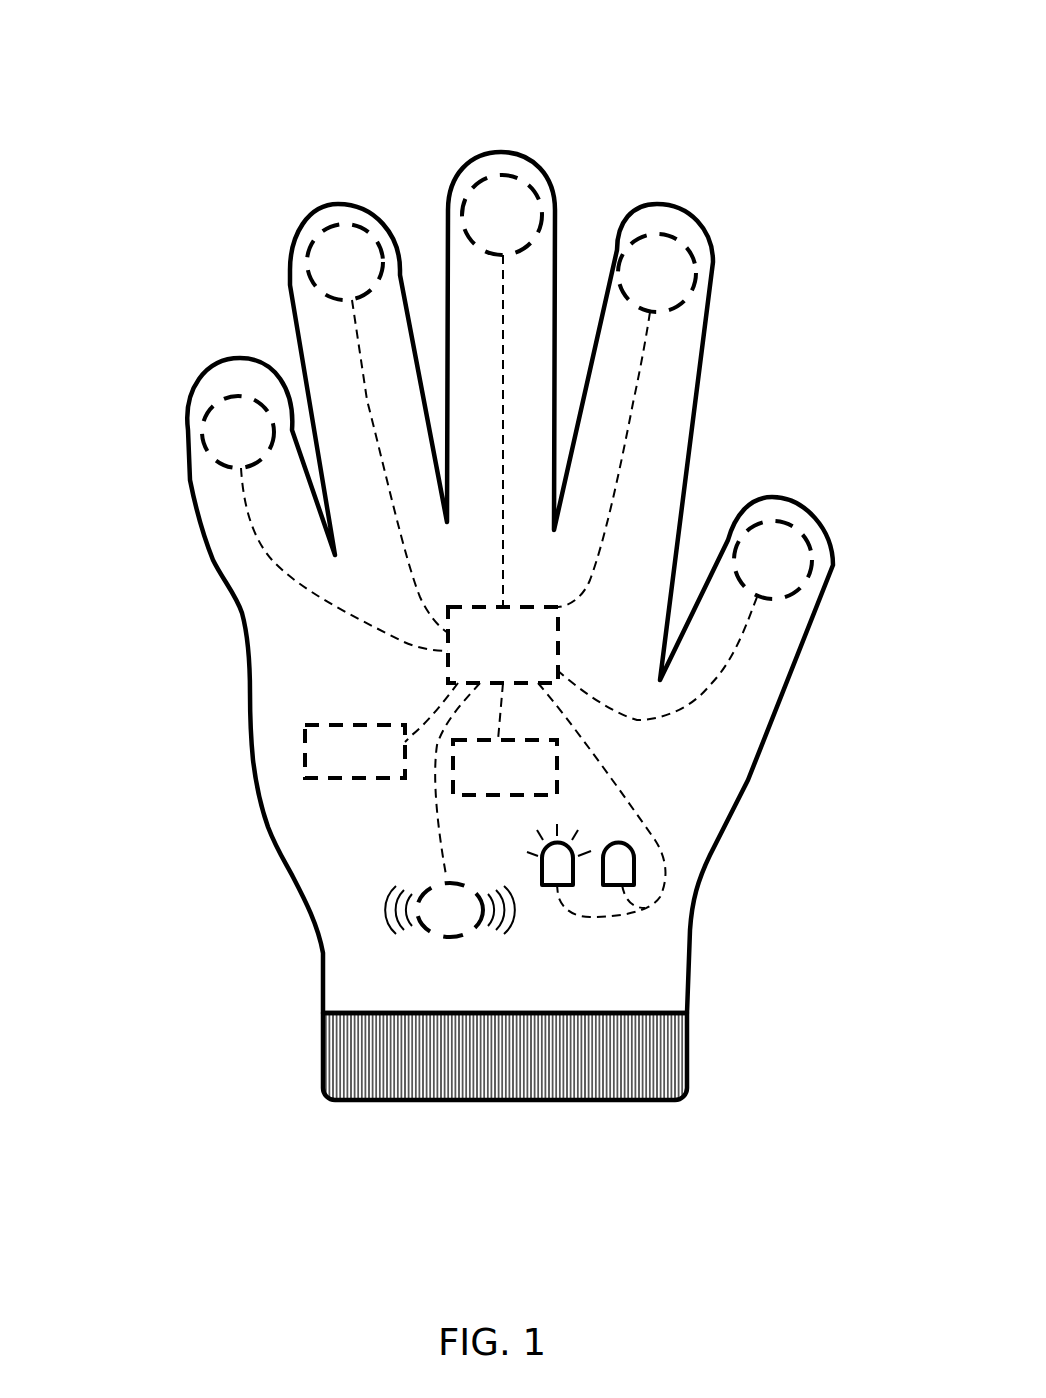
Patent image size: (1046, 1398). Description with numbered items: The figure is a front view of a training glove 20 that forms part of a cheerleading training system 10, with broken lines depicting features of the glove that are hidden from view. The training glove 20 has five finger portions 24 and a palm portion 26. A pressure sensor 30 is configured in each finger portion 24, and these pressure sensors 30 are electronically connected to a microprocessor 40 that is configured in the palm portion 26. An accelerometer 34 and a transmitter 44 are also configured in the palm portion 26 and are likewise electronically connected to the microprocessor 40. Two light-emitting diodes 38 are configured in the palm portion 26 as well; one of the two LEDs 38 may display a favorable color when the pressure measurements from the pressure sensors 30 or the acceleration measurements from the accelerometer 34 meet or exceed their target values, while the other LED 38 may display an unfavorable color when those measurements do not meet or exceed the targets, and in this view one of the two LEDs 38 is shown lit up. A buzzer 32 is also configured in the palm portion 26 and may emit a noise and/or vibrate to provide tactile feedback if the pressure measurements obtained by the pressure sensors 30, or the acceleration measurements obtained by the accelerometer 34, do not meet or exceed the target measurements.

The cheerleading training system 10 is at (122, 66).
The training glove 20 is at (735, 785).
The finger portion 24 is at (212, 382).
The palm portion 26 is at (373, 807).
The pressure sensor 30 is at (215, 437).
The buzzer 32 is at (463, 920).
The accelerometer 34 is at (489, 783).
The light-emitting diode 38 is at (557, 875).
The microprocessor 40 is at (491, 658).
The transmitter 44 is at (338, 765).